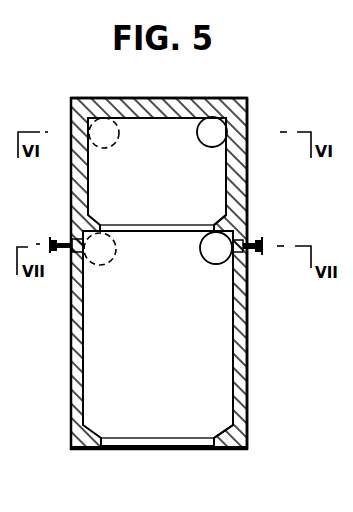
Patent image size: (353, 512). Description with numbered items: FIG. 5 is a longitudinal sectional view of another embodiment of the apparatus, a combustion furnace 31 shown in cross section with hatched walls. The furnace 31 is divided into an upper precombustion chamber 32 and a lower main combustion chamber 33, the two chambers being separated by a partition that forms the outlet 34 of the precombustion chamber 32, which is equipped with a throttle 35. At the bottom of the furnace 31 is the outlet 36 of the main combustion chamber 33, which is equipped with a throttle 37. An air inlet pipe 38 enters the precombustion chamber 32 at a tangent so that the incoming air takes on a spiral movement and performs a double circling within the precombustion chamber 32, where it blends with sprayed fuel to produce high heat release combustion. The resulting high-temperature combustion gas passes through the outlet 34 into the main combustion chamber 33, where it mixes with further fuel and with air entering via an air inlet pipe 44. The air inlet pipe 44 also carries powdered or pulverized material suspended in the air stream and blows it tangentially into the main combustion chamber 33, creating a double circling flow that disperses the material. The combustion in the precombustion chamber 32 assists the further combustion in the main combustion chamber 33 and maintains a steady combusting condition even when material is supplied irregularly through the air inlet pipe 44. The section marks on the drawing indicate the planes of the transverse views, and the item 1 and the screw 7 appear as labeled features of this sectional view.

The housing 1 is at (80, 175).
The screw 7 is at (257, 251).
The combustion furnace 31 is at (75, 332).
The precombustion chamber 32 is at (159, 106).
The main combustion chamber 33 is at (217, 347).
The outlet of the precombustion chamber 34 is at (179, 224).
The throttle 35 is at (236, 218).
The outlet of the main combustion chamber 36 is at (130, 441).
The throttle 37 is at (232, 439).
The air inlet pipe 38 is at (213, 128).
The air inlet pipe 44 is at (214, 247).